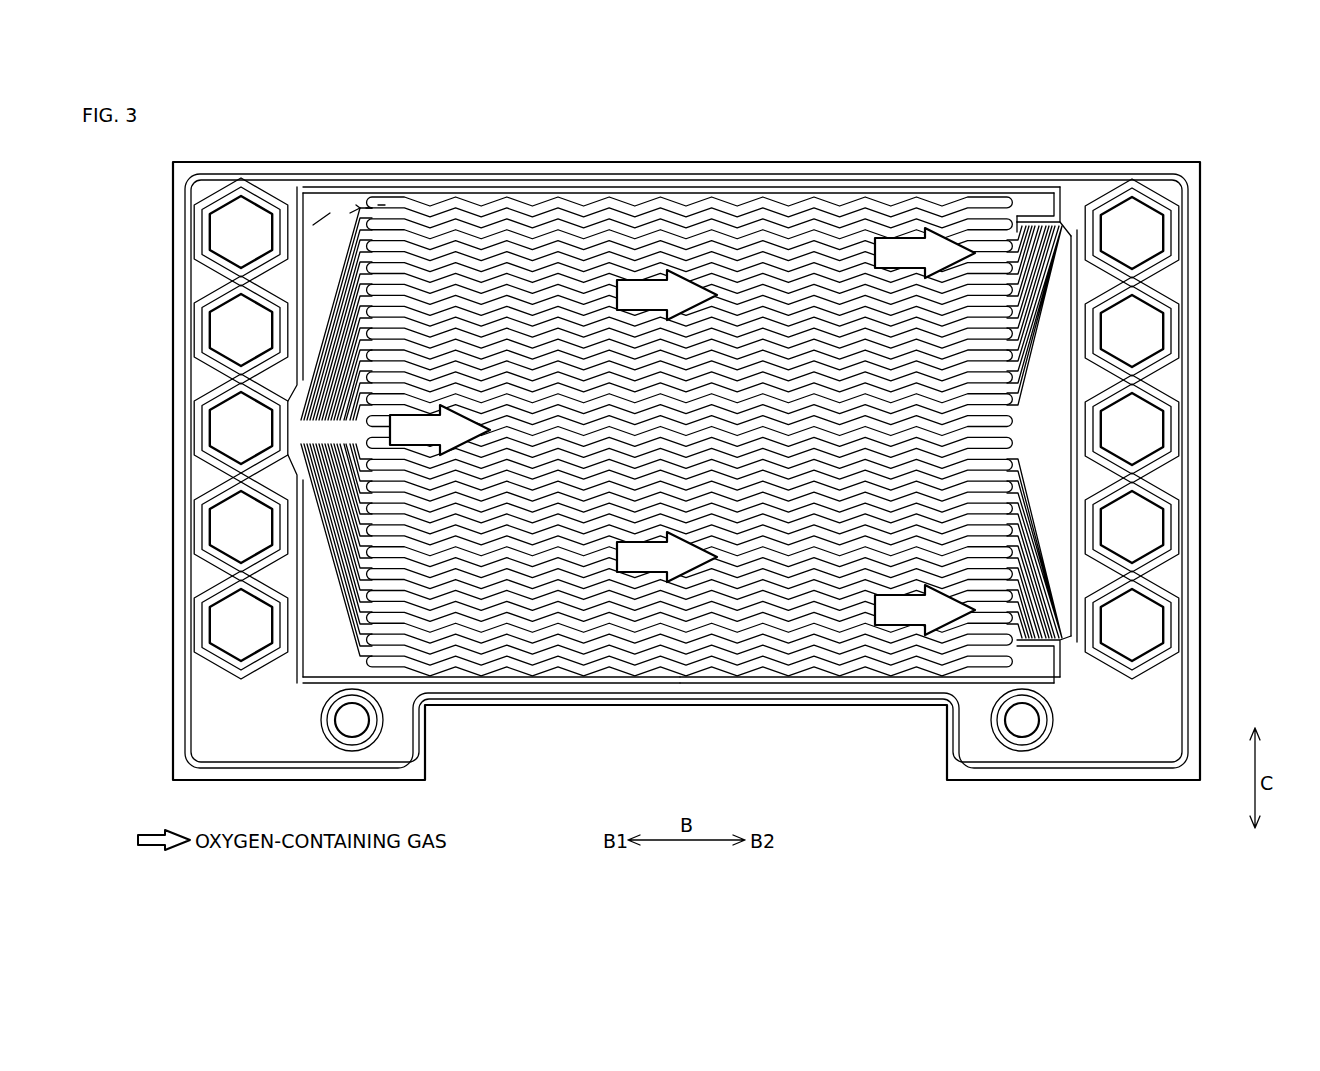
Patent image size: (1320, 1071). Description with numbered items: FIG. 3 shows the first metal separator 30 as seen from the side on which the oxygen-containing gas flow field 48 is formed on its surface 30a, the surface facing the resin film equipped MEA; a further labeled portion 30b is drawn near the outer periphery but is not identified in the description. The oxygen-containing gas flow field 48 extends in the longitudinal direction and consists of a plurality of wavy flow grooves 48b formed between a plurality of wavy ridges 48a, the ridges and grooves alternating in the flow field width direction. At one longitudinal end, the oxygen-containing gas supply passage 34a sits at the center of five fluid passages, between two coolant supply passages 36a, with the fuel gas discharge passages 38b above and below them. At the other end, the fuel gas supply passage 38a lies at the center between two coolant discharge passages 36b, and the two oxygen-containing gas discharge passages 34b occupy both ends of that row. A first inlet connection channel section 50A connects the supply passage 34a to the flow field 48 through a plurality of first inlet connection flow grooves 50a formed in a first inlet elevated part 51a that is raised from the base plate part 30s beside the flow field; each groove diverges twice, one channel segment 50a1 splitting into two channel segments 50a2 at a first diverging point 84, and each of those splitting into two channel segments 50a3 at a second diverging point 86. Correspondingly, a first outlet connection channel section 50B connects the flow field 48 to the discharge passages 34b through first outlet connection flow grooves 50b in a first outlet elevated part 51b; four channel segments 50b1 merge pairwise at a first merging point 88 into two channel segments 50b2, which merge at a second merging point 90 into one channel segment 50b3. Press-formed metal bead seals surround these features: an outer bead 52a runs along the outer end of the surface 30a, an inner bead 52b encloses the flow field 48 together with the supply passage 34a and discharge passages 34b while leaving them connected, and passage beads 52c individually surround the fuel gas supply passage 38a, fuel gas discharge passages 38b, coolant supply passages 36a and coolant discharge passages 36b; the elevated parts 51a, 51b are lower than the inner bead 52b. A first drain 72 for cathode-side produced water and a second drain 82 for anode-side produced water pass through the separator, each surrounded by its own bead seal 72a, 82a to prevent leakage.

The first metal separator 30 is at (691, 117).
The surface 30a is at (1150, 175).
The outer peripheral edge 30b is at (1165, 163).
The base plate part 30s is at (684, 444).
The oxygen-containing gas supply passage 34a is at (230, 428).
The oxygen-containing gas discharge passages 34b is at (1150, 233).
The coolant supply passages 36a is at (215, 340).
The coolant discharge passages 36b is at (1160, 320).
The fuel gas supply passage 38a is at (1150, 440).
The fuel gas discharge passages 38b is at (218, 240).
The oxygen-containing gas flow field 48 is at (690, 385).
The wavy ridges 48a is at (557, 235).
The wavy flow grooves 48b is at (612, 235).
The first inlet connection flow grooves 50a is at (255, 373).
The channel segment 50a1 is at (330, 213).
The channel segments 50a2 is at (356, 205).
The channel segments 50a3 is at (378, 205).
The first outlet connection flow grooves 50b is at (1084, 452).
The channel segments 50b1 is at (990, 205).
The channel segments 50b2 is at (1013, 210).
The channel segment 50b3 is at (1048, 215).
The first inlet connection channel section 50A is at (339, 646).
The first outlet connection channel section 50B is at (1036, 662).
The first inlet elevated part 51a is at (312, 225).
The first outlet elevated part 51b is at (1050, 385).
The outer bead 52a is at (772, 688).
The inner bead 52b is at (545, 680).
The passage beads 52c is at (205, 232).
The first drain 72 is at (1012, 715).
The bead seal 72a is at (1020, 735).
The second drain 82 is at (350, 722).
The bead seal 82a is at (365, 738).
The first diverging point 84 is at (350, 213).
The second diverging point 86 is at (366, 208).
The first merging point 88 is at (1010, 215).
The second merging point 90 is at (1040, 215).